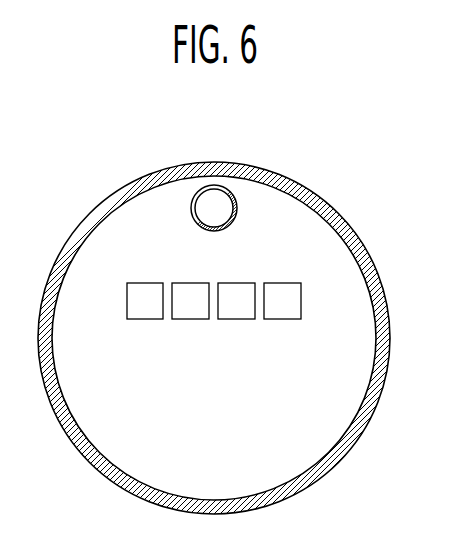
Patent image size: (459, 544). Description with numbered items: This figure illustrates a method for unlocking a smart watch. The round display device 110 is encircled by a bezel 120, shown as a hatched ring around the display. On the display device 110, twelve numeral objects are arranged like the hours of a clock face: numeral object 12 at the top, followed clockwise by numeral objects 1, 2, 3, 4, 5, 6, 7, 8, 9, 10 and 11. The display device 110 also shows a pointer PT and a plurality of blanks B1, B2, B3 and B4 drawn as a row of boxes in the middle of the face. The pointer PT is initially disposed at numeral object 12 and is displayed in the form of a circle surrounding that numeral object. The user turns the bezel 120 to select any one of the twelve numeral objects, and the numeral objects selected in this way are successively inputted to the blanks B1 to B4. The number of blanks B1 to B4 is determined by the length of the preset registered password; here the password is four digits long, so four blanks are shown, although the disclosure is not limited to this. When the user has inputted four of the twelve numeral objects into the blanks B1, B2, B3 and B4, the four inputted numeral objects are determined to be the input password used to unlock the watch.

The display device 110 is at (232, 338).
The bezel 120 is at (332, 204).
The numeral object "12" 12 is at (237, 209).
The pointer PT is at (244, 180).
The first blank B1 is at (144, 320).
The second blank B2 is at (190, 320).
The third blank B3 is at (235, 320).
The fourth blank B4 is at (282, 320).
The numeral object "1" 1 is at (277, 228).
The numeral object "2" 2 is at (325, 274).
The numeral object "3" 3 is at (342, 338).
The numeral object "4" 4 is at (325, 403).
The numeral object "5" 5 is at (277, 449).
The numeral object "6" 6 is at (213, 467).
The numeral object "7" 7 is at (149, 449).
The numeral object "8" 8 is at (102, 403).
The numeral object "9" 9 is at (86, 338).
The numeral object "10" 10 is at (102, 274).
The numeral object "11" 11 is at (151, 228).